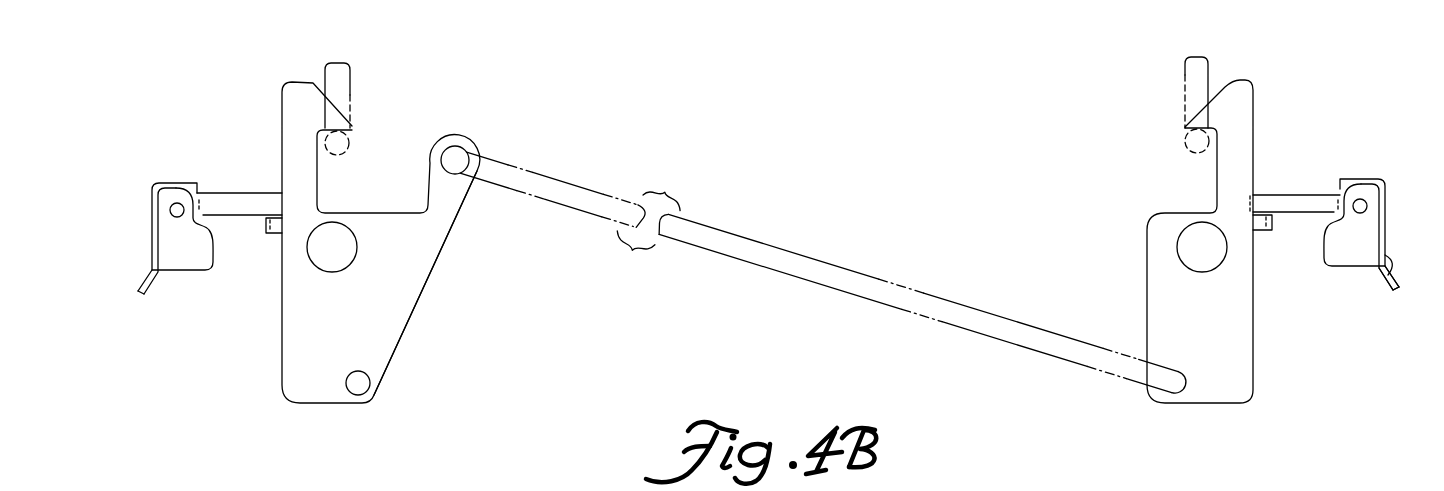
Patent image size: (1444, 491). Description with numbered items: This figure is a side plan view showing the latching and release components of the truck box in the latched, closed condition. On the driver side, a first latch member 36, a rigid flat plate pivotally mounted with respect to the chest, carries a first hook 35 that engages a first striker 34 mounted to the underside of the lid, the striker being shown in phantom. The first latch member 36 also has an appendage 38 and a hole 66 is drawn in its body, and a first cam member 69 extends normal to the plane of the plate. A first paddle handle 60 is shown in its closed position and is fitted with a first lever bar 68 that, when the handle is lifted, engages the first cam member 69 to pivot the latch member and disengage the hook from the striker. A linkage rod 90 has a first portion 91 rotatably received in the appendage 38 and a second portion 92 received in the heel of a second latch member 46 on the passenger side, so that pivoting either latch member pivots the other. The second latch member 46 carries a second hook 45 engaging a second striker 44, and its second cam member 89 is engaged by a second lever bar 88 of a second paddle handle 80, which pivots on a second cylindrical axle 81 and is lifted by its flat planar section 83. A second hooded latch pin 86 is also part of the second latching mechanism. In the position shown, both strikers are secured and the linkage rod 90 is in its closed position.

The first striker 34 is at (353, 83).
The first hook 35 is at (350, 126).
The first latch member 36 is at (400, 305).
The appendage 38 is at (448, 200).
The second striker 44 is at (1183, 68).
The second hook 45 is at (1193, 114).
The second latch member 46 is at (1232, 320).
The first paddle handle 60 is at (183, 262).
The hole in left plate 66 is at (332, 244).
The first lever bar 68 is at (243, 200).
The first cam member 69 is at (265, 232).
The second paddle handle 80 is at (1352, 258).
The second cylindrical axle 81 is at (1358, 204).
The flat planar section 83 is at (1397, 275).
The second hooded latch pin 86 is at (1197, 240).
The second lever bar 88 is at (1282, 205).
The second cam member 89 is at (1272, 230).
The linkage rod 90 is at (818, 274).
The first portion of linkage rod 91 is at (457, 157).
The second portion of linkage rod 92 is at (1176, 386).